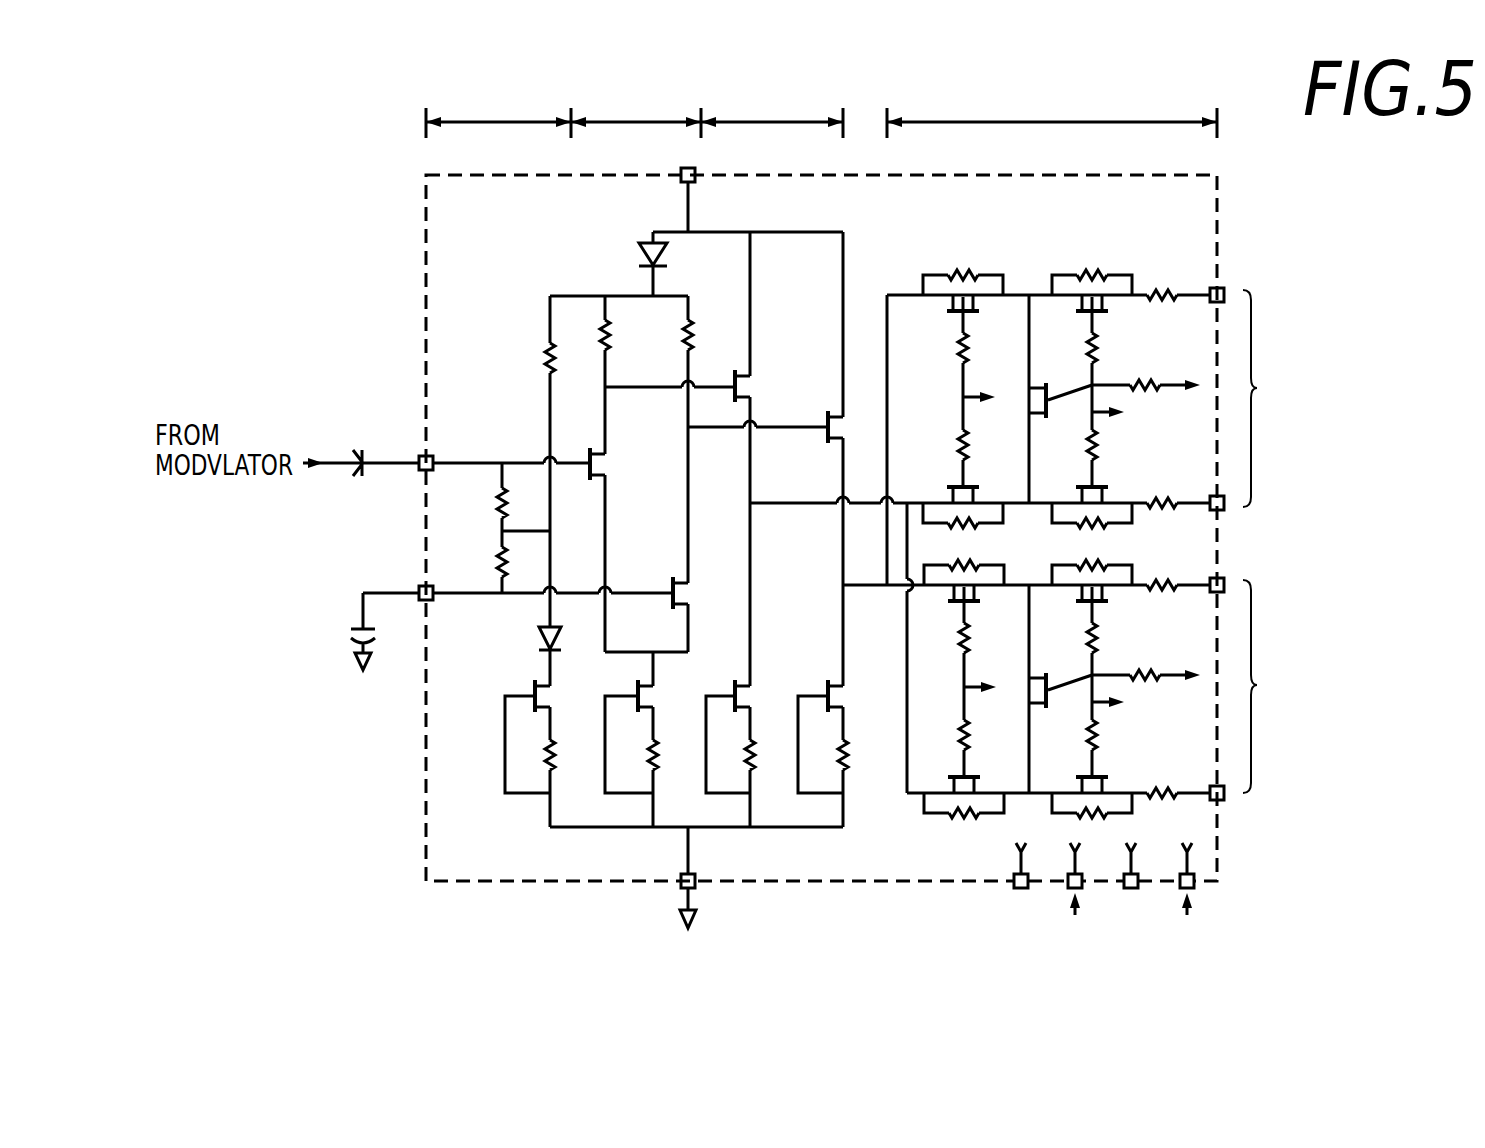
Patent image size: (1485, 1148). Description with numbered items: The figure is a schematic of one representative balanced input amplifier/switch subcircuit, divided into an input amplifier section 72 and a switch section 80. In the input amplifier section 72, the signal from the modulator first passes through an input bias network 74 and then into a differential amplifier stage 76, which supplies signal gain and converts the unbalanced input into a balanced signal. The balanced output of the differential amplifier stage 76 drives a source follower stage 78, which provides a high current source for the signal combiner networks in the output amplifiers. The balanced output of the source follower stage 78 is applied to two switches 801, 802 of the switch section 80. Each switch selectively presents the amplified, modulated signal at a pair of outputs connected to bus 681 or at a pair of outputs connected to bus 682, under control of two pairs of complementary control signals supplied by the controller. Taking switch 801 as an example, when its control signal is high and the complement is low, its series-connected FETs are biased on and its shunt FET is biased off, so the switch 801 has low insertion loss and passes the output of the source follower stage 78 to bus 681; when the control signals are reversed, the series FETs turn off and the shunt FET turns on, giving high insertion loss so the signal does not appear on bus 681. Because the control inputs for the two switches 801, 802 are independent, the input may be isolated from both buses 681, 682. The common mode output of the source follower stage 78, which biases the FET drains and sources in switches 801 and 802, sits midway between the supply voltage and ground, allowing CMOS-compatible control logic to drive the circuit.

The input amplifier section 72 is at (540, 257).
The input bias network 74 is at (487, 377).
The differential amplifier stage 76 is at (674, 510).
The source follower stage 78 is at (804, 455).
The switch section 80 is at (1052, 110).
The switch 801 is at (950, 418).
The switch 802 is at (962, 699).
The bus 681 is at (1228, 399).
The bus 682 is at (1228, 689).